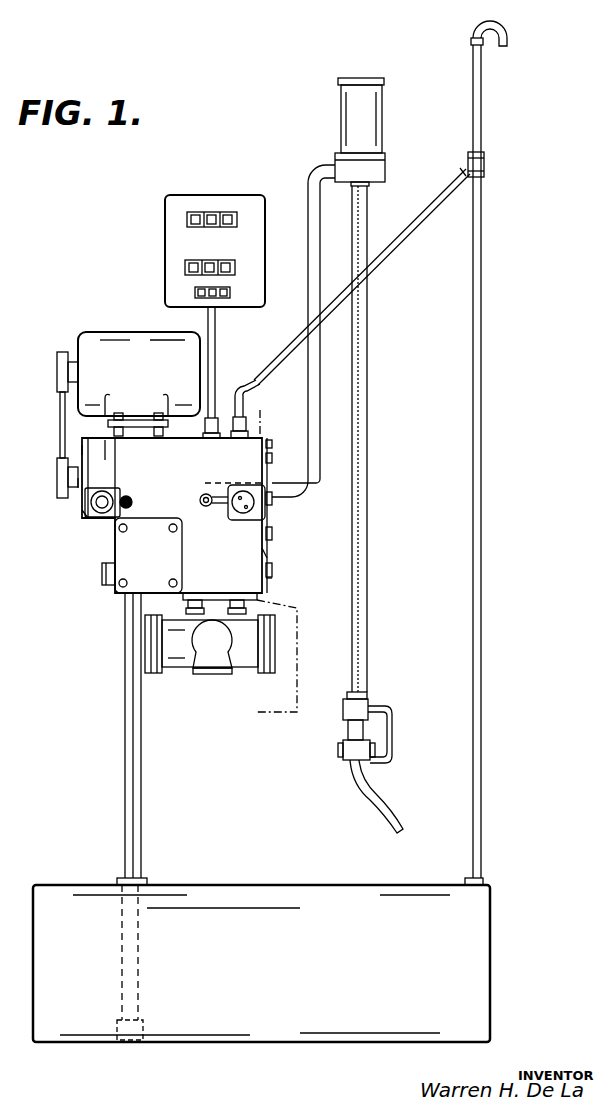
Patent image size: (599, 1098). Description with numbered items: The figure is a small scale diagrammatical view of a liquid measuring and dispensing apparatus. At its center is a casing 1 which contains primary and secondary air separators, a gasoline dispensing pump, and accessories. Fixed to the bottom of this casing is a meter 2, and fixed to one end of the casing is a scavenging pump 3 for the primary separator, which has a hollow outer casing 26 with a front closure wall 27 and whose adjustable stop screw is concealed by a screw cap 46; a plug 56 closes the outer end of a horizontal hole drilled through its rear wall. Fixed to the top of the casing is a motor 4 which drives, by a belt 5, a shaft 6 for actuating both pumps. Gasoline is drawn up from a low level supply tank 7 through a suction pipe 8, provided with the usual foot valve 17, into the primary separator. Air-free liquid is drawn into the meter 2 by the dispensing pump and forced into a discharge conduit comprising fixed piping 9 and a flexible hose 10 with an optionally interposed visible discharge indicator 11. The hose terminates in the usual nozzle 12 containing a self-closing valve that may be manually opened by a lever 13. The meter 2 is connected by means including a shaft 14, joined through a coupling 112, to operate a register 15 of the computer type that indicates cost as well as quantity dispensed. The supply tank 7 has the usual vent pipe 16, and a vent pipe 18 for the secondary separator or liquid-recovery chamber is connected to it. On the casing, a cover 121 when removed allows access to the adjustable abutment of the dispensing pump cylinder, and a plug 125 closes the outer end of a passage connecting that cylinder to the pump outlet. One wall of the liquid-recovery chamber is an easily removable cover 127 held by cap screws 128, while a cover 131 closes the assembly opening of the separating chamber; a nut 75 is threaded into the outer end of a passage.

The casing 1 is at (177, 515).
The meter 2 is at (272, 410).
The scavenging pump 3 is at (72, 451).
The motor 4 is at (139, 384).
The belt 5 is at (57, 403).
The shaft 6 is at (76, 486).
The supply tank 7 is at (261, 963).
The suction pipe 8 is at (141, 776).
The fixed piping 9 is at (318, 426).
The flexible hose 10 is at (360, 577).
The visible discharge indicator 11 is at (371, 132).
The nozzle 12 is at (378, 801).
The lever 13 is at (386, 731).
The shaft 14 is at (214, 346).
The register 15 is at (172, 243).
The vent pipe 16 is at (480, 398).
The foot valve 17 is at (142, 1030).
The vent pipe 18 is at (389, 244).
The outer casing 26 is at (105, 452).
The front closure wall 27 is at (83, 512).
The screw cap 46 is at (104, 497).
The plug 56 is at (133, 501).
The nut 75 is at (101, 575).
The coupling 112 is at (222, 414).
The cover 121 is at (267, 500).
The plug 125 is at (207, 507).
The cover 127 is at (266, 554).
The cap screws 128 is at (270, 584).
The cover 131 is at (148, 555).